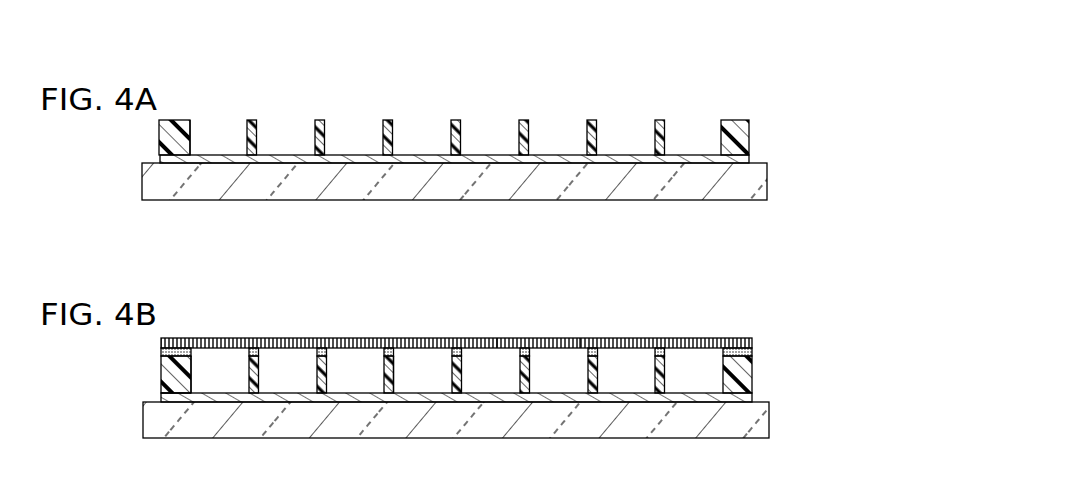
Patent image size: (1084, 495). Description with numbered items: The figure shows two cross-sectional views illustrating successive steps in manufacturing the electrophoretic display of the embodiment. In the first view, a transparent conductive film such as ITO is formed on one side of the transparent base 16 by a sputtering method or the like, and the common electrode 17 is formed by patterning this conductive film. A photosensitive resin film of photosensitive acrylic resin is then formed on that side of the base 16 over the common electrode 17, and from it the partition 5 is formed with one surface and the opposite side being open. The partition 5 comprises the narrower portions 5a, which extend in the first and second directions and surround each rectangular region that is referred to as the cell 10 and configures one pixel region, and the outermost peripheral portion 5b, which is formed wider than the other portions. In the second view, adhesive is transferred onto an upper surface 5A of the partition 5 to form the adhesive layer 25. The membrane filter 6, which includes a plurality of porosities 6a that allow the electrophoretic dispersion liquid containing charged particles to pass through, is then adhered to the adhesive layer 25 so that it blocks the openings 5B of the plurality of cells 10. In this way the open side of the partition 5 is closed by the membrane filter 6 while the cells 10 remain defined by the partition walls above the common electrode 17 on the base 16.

In FIG. 4A, the partition 5 is at (456, 137).
In FIG. 4B, the partition 5 is at (753, 372).
In FIG. 4A, the partition (other portion) 5a is at (521, 119).
In FIG. 4A, the outermost peripheral portion 5b is at (742, 120).
In FIG. 4B, the upper surface 5A is at (177, 392).
In FIG. 4A, the openings 5B is at (190, 136).
In FIG. 4B, the openings 5B is at (191, 376).
In FIG. 4B, the membrane filter 6 is at (753, 342).
In FIG. 4B, the porosities 6a is at (511, 339).
In FIG. 4A, the cell 10 is at (353, 112).
In FIG. 4B, the cell 10 is at (353, 348).
In FIG. 4A, the transparent base 16 is at (757, 173).
In FIG. 4B, the transparent base 16 is at (759, 408).
In FIG. 4A, the common electrode 17 is at (750, 157).
In FIG. 4B, the common electrode 17 is at (756, 396).
In FIG. 4B, the adhesive layer 25 is at (753, 352).